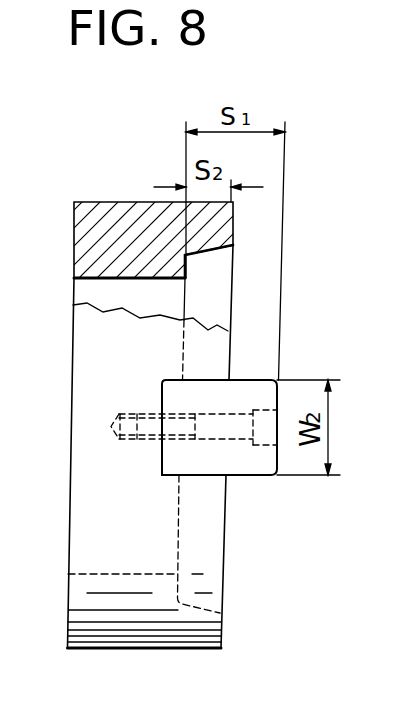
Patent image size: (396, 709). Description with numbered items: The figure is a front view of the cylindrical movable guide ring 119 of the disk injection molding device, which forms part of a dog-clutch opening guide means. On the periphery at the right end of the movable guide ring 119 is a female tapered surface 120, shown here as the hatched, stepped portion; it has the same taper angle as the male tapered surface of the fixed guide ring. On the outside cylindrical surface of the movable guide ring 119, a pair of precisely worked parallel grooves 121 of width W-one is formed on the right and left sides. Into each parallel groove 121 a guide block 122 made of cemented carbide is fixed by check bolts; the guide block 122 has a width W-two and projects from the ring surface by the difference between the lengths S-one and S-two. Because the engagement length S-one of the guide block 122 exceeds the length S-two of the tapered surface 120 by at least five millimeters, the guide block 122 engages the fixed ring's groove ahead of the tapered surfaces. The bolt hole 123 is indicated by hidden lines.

The cylindrical movable guide ring 119 is at (122, 213).
The female tapered surface 120 is at (208, 253).
The parallel groove 121 is at (193, 475).
The guide block 122 is at (250, 393).
The threaded screw hole 123 is at (239, 440).